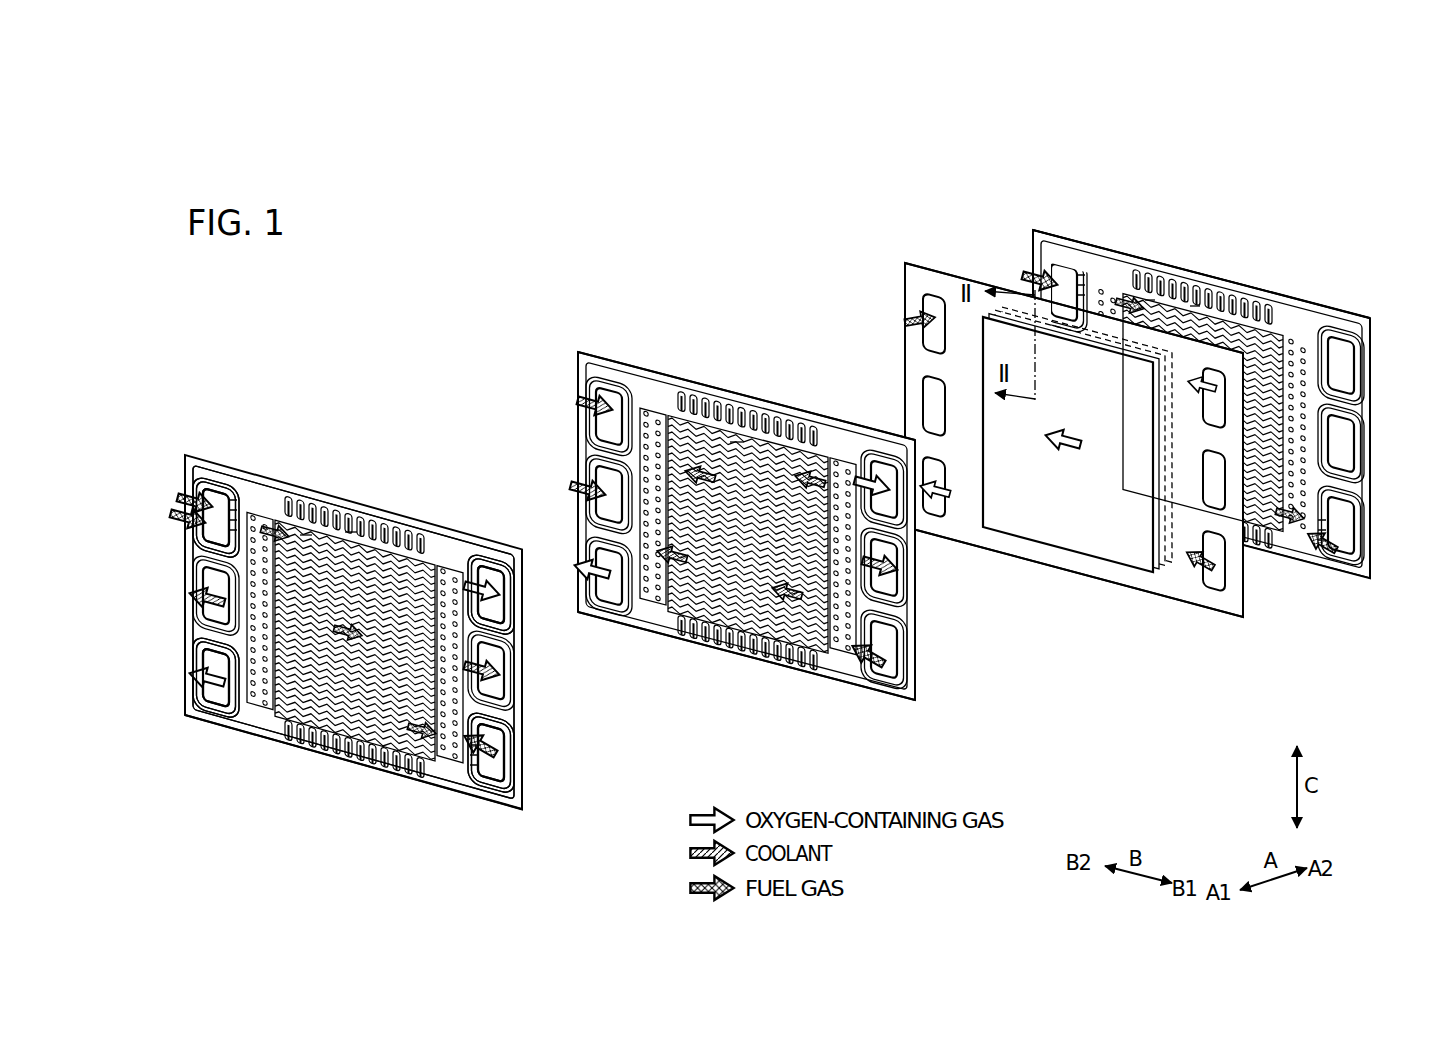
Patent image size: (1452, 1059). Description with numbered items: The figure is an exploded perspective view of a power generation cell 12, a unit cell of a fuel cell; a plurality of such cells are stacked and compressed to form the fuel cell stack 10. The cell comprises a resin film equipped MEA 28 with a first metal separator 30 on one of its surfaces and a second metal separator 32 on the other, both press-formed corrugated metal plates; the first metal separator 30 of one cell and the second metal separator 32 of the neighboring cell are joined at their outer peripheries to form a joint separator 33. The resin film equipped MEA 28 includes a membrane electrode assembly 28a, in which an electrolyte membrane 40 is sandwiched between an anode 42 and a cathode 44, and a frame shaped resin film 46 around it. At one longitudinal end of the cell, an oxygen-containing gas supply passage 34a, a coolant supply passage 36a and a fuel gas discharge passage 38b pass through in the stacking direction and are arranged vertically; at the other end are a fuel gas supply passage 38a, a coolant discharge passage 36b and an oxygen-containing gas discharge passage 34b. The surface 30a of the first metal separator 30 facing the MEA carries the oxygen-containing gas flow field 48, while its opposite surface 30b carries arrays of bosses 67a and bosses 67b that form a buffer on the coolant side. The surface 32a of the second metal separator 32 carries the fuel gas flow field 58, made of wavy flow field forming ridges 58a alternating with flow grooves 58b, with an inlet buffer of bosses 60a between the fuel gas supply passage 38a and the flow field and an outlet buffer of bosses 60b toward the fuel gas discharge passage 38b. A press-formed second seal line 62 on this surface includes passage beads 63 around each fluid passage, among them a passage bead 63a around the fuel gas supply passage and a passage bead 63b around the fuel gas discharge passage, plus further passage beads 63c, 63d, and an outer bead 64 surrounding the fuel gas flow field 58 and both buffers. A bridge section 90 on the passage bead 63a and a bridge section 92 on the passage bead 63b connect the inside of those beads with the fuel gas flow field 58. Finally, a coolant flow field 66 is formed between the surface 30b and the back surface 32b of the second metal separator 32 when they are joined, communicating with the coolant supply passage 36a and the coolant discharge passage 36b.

The fuel cell stack 10 is at (380, 199).
The power generation cell 12 is at (560, 186).
The resin film equipped MEA 28 is at (904, 258).
The membrane electrode assembly 28a is at (1108, 556).
The first metal separator 30 is at (577, 348).
The surface of first metal separator 30a is at (728, 668).
The surface of first metal separator 30b is at (706, 640).
The second metal separator 32 is at (185, 450).
The surface of second metal separator 32a is at (309, 752).
The surface of second metal separator 32b is at (335, 758).
The joint separator 33 is at (398, 405).
The oxygen-containing gas supply passage 34a is at (490, 574).
The oxygen-containing gas discharge passage 34b is at (212, 660).
The coolant supply passage 36a is at (508, 690).
The coolant discharge passage 36b is at (220, 614).
The fuel gas supply passage 38a is at (1065, 298).
The fuel gas discharge passage 38b is at (493, 772).
The electrolyte membrane 40 is at (1088, 546).
The anode 42 is at (1158, 576).
The cathode 44 is at (1047, 535).
The resin film 46 is at (931, 283).
The oxygen-containing gas flow field 48 is at (737, 442).
The fuel gas flow field 58 is at (393, 452).
The flow field forming ridges 58a is at (306, 535).
The flow grooves 58b is at (351, 532).
The bosses 60a is at (268, 704).
The bosses 60b is at (456, 774).
The second seal line 62 is at (600, 796).
The passage beads 63 is at (192, 544).
The passage bead 63a is at (632, 362).
The passage bead 63b is at (933, 754).
The passage bead around oxygen-containing gas supply passage 63c is at (952, 539).
The passage bead around oxygen-containing gas discharge passage 63d is at (186, 706).
The outer bead 64 is at (516, 771).
The coolant flow field 66 is at (703, 432).
The bosses 67a is at (838, 650).
The bosses 67b is at (653, 600).
The bridge section 90 is at (236, 500).
The bridge section 92 is at (473, 778).